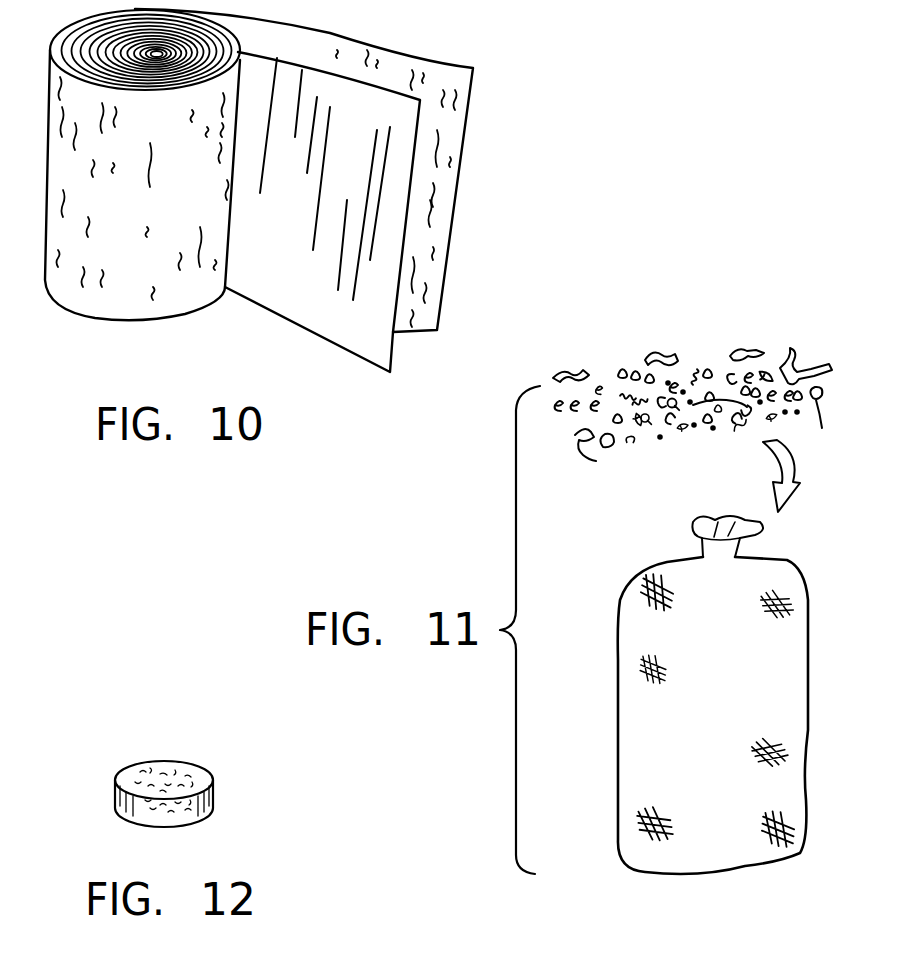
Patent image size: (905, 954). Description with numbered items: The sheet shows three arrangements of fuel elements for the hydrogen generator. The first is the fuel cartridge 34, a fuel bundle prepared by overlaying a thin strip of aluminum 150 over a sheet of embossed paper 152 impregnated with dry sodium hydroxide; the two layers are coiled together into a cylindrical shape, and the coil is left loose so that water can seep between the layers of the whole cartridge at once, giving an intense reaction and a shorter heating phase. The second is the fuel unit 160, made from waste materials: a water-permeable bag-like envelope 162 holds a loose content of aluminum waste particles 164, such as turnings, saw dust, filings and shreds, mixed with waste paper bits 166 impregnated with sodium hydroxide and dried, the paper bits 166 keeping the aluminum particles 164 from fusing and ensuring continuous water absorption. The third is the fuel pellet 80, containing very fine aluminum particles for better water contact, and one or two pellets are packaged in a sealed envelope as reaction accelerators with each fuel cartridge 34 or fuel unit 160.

In FIG. 10, the fuel cartridge 34 is at (93, 313).
In FIG. 10, the thin strip of aluminum 150 is at (297, 318).
In FIG. 10, the sheet of embossed paper 152 is at (465, 137).
In FIG. 11, the fuel unit 160 is at (608, 565).
In FIG. 11, the envelope 162 is at (802, 577).
In FIG. 11, the aluminum waste particles 164 is at (750, 352).
In FIG. 11, the paper bits 166 is at (702, 360).
In FIG. 12, the fuel pellet 80 is at (195, 761).